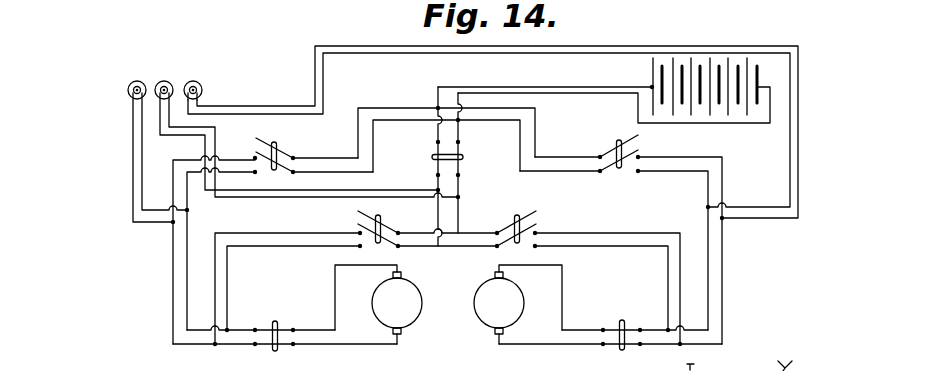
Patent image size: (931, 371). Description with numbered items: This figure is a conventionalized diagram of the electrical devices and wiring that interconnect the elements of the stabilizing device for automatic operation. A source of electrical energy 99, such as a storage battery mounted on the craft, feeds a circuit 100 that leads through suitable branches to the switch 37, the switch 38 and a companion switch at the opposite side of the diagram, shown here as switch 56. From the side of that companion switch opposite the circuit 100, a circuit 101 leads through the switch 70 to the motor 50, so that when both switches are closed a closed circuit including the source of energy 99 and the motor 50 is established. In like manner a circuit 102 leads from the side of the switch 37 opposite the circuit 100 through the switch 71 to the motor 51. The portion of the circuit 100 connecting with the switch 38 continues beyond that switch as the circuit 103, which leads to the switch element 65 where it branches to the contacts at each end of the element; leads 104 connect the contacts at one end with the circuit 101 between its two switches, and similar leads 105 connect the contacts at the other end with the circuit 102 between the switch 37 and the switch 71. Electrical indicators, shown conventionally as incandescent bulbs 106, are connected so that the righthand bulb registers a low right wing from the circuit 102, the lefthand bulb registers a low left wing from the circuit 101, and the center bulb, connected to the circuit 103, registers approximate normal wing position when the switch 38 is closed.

The incandescent bulbs 106 is at (192, 80).
The circuit 102 is at (708, 258).
The circuit 101 is at (187, 270).
The leads 104 is at (215, 268).
The leads 105 is at (668, 273).
The circuit 100 is at (358, 142).
The circuit 103 is at (438, 243).
The switch 38 is at (463, 157).
The source of electrical energy 99 is at (653, 72).
The switch 56 is at (277, 143).
The switch 37 is at (617, 144).
The switch element 65 is at (516, 216).
The motor 50 is at (378, 304).
The motor 51 is at (518, 304).
The switch 70 is at (278, 330).
The switch 71 is at (623, 327).